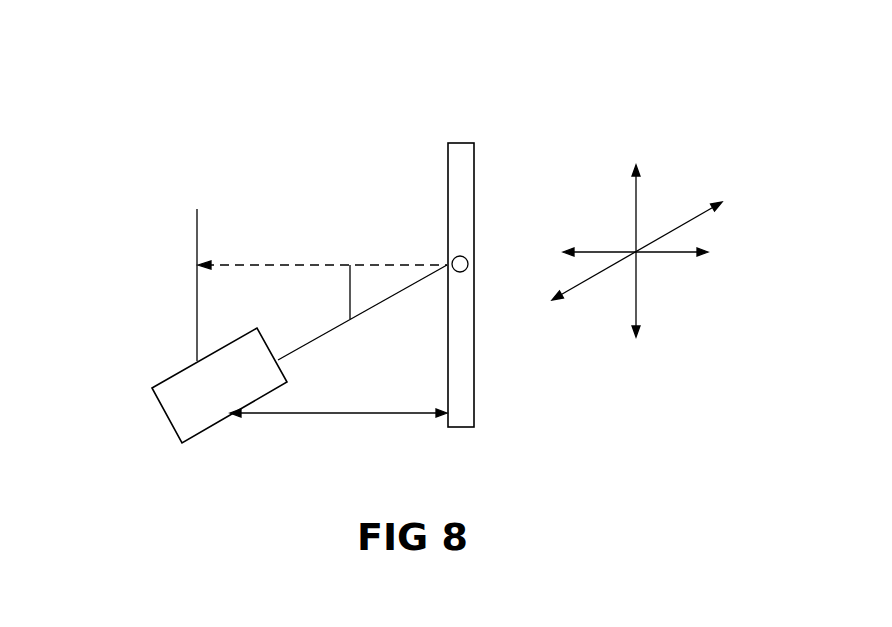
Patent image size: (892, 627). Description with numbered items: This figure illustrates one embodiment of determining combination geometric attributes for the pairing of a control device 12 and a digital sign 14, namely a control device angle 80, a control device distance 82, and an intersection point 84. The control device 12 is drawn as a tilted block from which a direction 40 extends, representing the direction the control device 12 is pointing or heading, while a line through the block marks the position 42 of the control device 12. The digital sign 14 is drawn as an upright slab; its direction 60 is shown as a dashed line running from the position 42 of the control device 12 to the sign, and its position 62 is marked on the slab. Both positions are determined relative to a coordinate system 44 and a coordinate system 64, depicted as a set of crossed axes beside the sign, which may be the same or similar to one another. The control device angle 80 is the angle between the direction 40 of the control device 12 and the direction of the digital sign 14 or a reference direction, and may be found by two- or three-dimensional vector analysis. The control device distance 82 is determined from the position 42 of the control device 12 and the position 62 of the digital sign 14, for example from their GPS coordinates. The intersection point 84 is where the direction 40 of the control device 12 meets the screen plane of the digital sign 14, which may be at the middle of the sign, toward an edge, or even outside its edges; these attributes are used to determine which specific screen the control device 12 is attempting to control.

The control device 12 is at (219, 385).
The digital sign 14 is at (478, 216).
The direction of the control device 40 is at (306, 334).
The position of the control device 42 is at (187, 265).
The coordinate system 44 is at (666, 235).
The direction of the digital sign 60 is at (333, 261).
The position of the digital sign 62 is at (470, 248).
The coordinate system 64 is at (702, 185).
The control device angle 80 is at (354, 288).
The control device distance 82 is at (257, 260).
The intersection point 84 is at (441, 259).